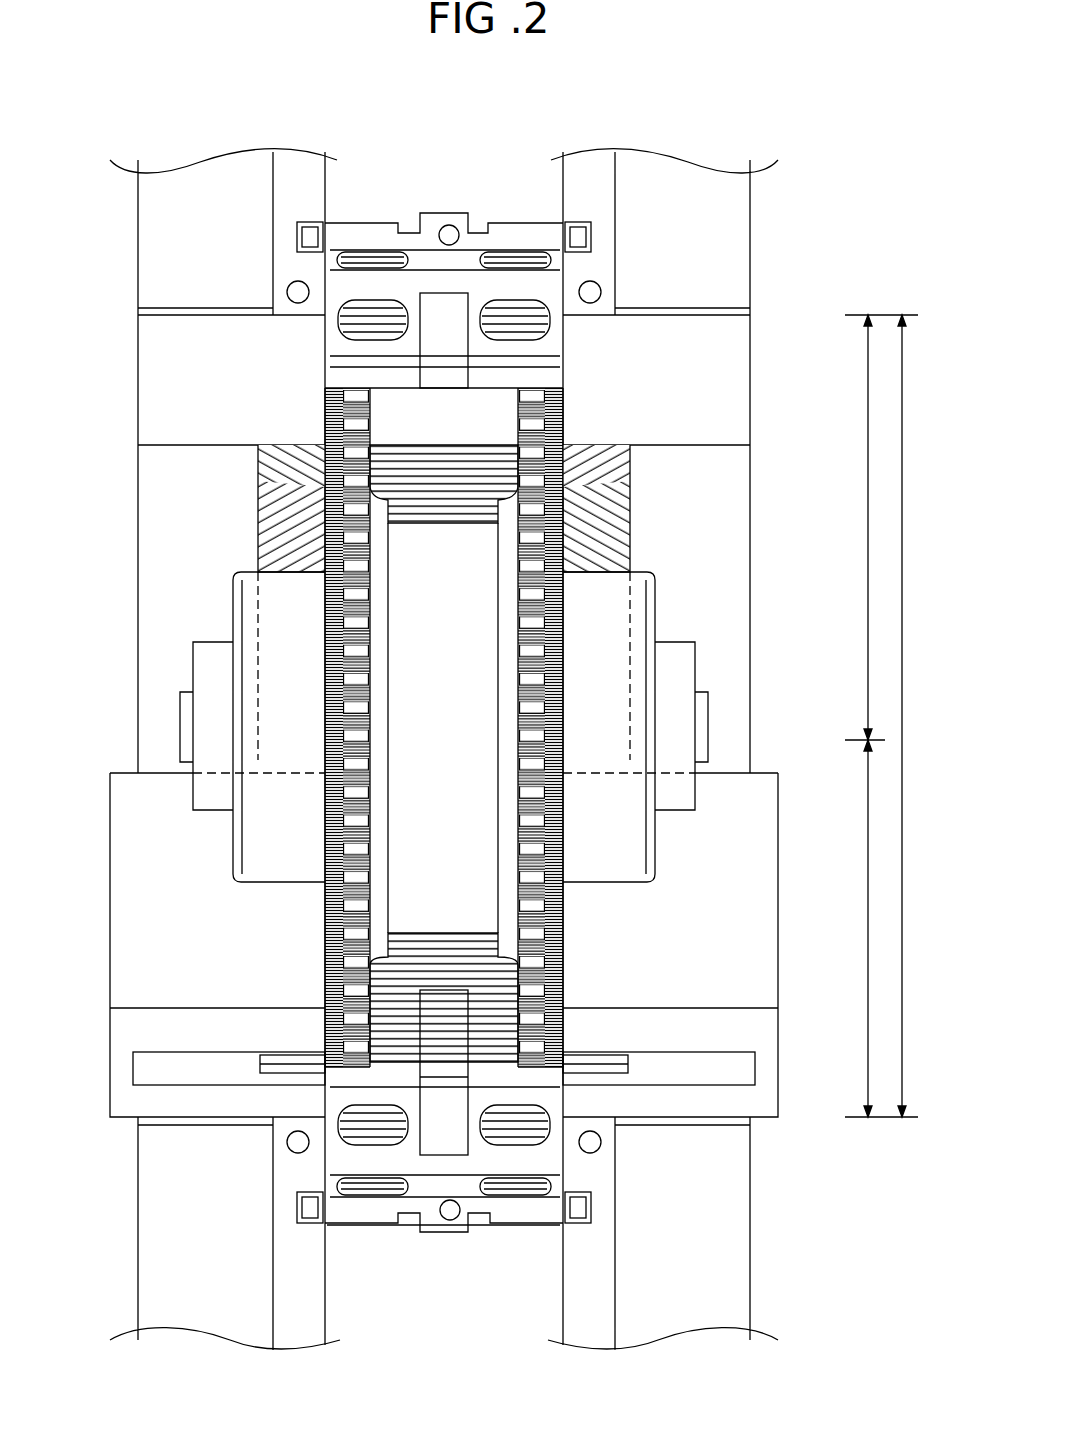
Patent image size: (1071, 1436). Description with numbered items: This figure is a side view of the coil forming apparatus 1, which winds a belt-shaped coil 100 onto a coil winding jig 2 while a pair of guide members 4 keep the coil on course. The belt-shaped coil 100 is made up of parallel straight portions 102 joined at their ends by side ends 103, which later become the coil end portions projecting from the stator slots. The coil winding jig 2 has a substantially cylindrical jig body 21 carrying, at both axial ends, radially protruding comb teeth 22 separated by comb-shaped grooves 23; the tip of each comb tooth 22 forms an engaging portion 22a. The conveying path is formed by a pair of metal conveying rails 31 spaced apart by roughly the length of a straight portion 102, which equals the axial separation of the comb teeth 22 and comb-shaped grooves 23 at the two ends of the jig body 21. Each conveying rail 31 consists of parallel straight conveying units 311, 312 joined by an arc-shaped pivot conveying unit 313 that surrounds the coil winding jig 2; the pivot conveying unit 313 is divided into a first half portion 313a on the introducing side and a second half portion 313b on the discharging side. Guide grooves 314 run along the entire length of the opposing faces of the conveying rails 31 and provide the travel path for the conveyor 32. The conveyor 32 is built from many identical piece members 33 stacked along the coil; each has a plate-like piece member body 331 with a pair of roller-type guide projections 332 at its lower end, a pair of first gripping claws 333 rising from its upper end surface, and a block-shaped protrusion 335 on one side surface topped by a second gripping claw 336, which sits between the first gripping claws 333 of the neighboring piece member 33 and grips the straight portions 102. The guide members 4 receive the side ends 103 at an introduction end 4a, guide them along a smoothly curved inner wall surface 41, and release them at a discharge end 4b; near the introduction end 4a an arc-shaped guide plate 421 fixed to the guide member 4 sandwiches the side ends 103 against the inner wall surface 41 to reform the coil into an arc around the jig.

The coil forming apparatus 1 is at (500, 147).
The coil winding jig 2 is at (434, 727).
The guide member 4 is at (491, 749).
The introduction end 4a is at (195, 1080).
The discharge end 4b is at (180, 448).
The jig body 21 is at (415, 905).
The comb tooth 22 is at (445, 727).
The engaging portion 22a is at (328, 797).
The comb-shaped groove 23 is at (328, 697).
The conveying rail 31 is at (444, 1233).
The straight conveying unit 311 is at (285, 1250).
The straight conveying unit 312 is at (285, 180).
The pivot conveying unit 313 is at (902, 728).
The first half portion 313a is at (862, 930).
The second half portion 313b is at (868, 605).
The guide groove 314 is at (327, 1225).
The conveyor 32 is at (451, 707).
The piece member 33 is at (451, 721).
The piece member body 331 is at (451, 721).
The guide projection 332 is at (312, 232).
The first gripping claw 333 is at (347, 370).
The protrusion 335 is at (433, 1137).
The second gripping claw 336 is at (435, 373).
The inner wall surface 41 is at (178, 547).
The guide plate 421 is at (128, 812).
The belt-shaped coil 100 is at (440, 725).
The straight portion 102 is at (478, 492).
The side end 103 is at (253, 455).